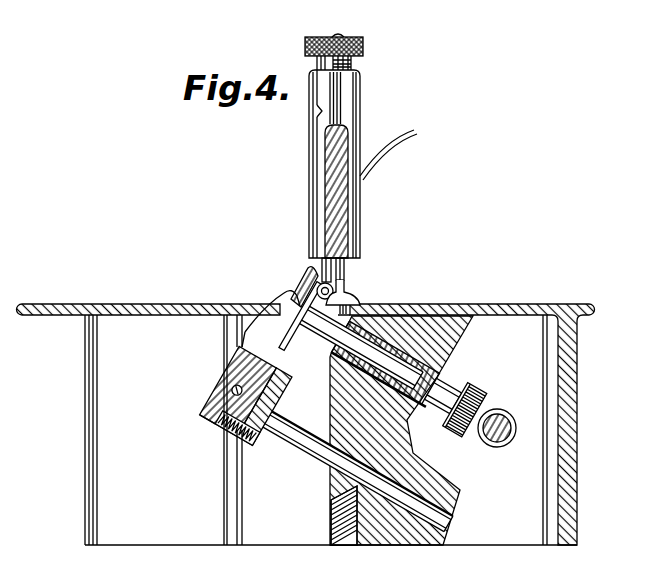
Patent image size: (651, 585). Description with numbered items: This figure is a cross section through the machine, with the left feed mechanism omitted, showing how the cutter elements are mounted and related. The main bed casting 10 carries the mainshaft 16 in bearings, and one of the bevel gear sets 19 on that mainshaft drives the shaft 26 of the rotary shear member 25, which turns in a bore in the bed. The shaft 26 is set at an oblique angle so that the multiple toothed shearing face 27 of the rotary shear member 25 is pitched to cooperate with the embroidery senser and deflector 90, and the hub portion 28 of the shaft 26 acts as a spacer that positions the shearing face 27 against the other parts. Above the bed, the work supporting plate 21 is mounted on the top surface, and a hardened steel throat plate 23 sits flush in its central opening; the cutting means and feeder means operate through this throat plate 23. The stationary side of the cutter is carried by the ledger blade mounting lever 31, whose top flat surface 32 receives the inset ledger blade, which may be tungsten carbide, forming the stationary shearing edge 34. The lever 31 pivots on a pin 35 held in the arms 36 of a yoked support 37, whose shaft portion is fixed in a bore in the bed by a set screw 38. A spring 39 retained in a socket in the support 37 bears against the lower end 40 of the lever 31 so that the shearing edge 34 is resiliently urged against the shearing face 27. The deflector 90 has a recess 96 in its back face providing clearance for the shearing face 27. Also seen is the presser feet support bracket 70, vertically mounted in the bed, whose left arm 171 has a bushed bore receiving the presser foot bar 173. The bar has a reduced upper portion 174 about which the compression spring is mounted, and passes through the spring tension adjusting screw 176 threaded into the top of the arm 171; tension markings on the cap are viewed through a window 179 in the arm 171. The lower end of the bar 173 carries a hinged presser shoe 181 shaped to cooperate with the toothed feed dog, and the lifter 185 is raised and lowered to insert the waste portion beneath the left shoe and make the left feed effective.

The main bed casting 10 is at (424, 541).
The mainshaft 16 is at (501, 446).
The bevel gear set 19 is at (472, 390).
The work supporting plate 21 is at (509, 304).
The throat plate 23 is at (188, 304).
The rotary shear member 25 is at (333, 356).
The shaft 26 is at (437, 380).
The multiple toothed shearing face 27 is at (305, 350).
The hub portion 28 is at (296, 333).
The ledger blade mounting lever 31 is at (256, 333).
The top flat surface 32 is at (279, 300).
The stationary shearing edge 34 is at (304, 294).
The pin 35 is at (232, 390).
The arms 36 is at (276, 404).
The yoked support 37 is at (252, 445).
The set screw 38 is at (332, 519).
The spring 39 is at (232, 441).
The lower end 40 is at (207, 412).
The presser feet support bracket 70 is at (343, 212).
The embroidery senser and deflector 90 is at (319, 284).
The recess 96 is at (346, 268).
The left arm 171 is at (357, 106).
The presser foot bar 173 is at (343, 270).
The reduced cross-section upper portion 174 is at (338, 32).
The spring tension adjusting screw 176 is at (364, 46).
The window 179 is at (315, 111).
The hinged presser shoe 181 is at (357, 296).
The lifter 185 is at (416, 133).